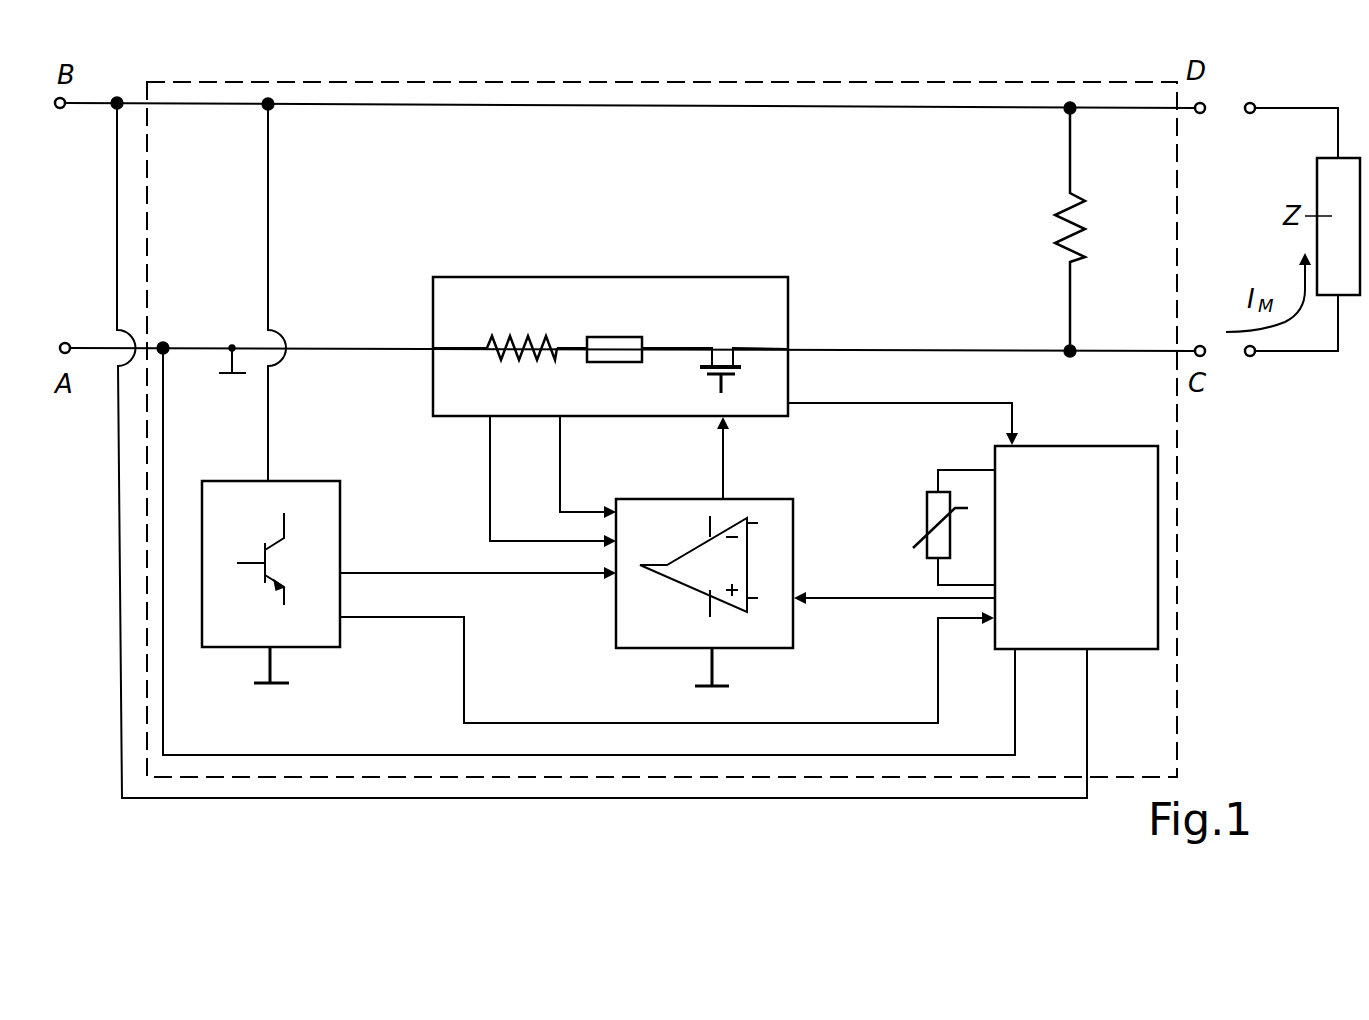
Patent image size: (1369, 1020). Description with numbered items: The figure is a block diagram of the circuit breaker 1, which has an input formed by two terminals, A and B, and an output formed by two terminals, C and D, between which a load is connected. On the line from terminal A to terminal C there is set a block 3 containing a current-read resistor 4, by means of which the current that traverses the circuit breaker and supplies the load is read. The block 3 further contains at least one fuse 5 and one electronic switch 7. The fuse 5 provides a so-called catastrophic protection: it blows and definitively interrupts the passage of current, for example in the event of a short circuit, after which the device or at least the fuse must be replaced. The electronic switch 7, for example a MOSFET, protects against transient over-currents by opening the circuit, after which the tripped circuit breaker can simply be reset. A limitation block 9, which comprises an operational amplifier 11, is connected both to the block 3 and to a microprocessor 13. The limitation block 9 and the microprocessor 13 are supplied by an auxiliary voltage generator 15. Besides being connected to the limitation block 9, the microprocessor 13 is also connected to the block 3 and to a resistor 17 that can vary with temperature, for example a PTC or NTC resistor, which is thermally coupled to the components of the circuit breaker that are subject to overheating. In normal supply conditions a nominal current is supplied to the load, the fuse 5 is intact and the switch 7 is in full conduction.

The circuit breaker 1 is at (820, 80).
The block 3 is at (492, 285).
The current-read resistor 4 is at (545, 362).
The fuse 5 is at (602, 340).
The electronic switch 7 is at (728, 378).
The limitation block 9 is at (780, 540).
The operational amplifier 11 is at (692, 565).
The microprocessor 13 is at (1097, 450).
The auxiliary voltage generator 15 is at (330, 515).
The resistor that can vary with temperature 17 is at (930, 517).